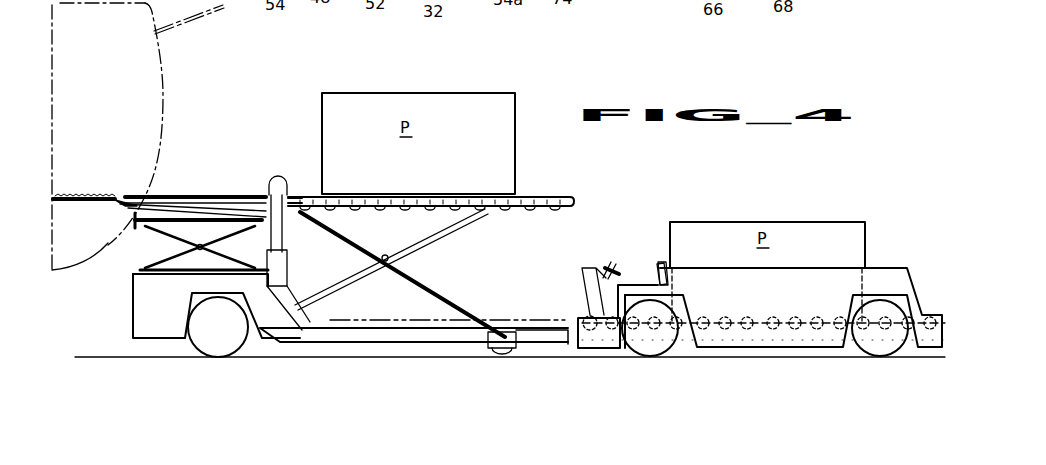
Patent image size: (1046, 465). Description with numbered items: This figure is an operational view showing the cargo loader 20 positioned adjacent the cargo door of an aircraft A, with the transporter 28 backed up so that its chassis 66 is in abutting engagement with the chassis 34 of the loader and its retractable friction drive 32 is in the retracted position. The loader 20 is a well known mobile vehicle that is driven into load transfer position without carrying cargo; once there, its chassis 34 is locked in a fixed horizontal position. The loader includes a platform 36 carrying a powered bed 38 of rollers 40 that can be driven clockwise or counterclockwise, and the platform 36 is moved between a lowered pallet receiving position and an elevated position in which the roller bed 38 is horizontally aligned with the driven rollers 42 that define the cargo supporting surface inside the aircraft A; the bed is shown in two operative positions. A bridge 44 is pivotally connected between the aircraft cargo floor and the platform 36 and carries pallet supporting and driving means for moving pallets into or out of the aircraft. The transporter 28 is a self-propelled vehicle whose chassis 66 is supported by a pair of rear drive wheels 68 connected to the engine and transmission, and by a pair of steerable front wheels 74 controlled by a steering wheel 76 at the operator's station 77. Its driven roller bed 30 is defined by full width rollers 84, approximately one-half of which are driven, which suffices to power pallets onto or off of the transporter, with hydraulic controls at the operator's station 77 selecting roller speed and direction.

The aircraft A is at (163, 86).
The cargo loader 20 is at (298, 184).
The transporter 28 is at (904, 263).
The driven roller bed 30 is at (776, 319).
The retractable friction drive 32 is at (582, 350).
The chassis of the loader 34 is at (398, 338).
The platform 36 is at (522, 322).
The powered bed 38 is at (540, 194).
The rollers 40 is at (374, 196).
The driven rollers 42 is at (80, 196).
The bridge 44 is at (180, 198).
The chassis 66 is at (766, 341).
The rear drive wheels 68 is at (882, 348).
The steerable front wheels 74 is at (661, 338).
The steering wheel 76 is at (606, 262).
The operator's station 77 is at (635, 277).
The full width rollers 84 is at (722, 333).